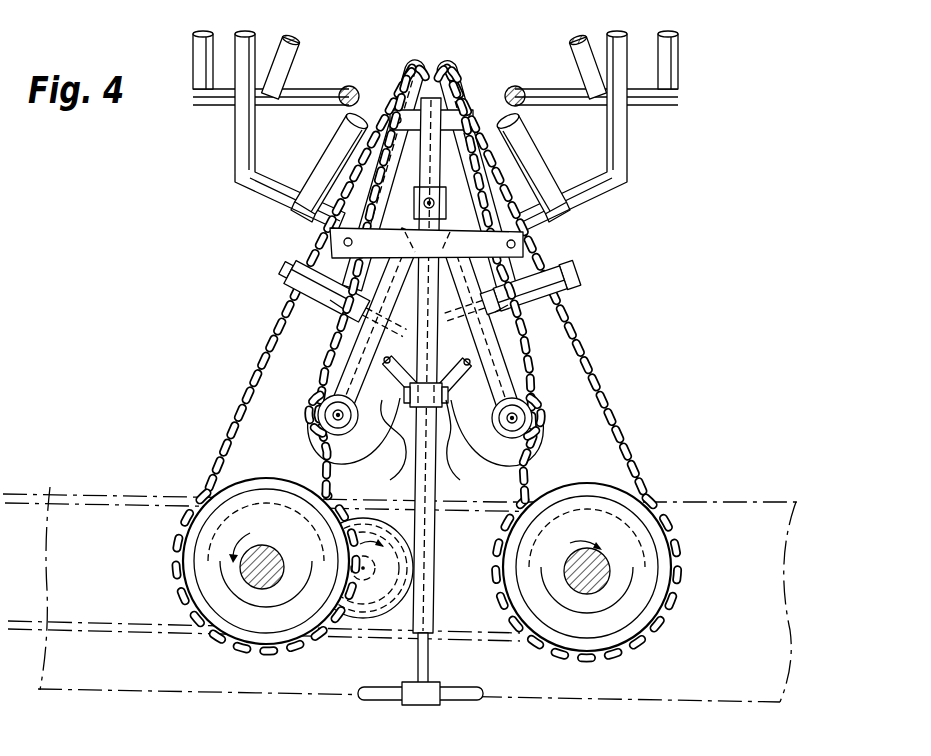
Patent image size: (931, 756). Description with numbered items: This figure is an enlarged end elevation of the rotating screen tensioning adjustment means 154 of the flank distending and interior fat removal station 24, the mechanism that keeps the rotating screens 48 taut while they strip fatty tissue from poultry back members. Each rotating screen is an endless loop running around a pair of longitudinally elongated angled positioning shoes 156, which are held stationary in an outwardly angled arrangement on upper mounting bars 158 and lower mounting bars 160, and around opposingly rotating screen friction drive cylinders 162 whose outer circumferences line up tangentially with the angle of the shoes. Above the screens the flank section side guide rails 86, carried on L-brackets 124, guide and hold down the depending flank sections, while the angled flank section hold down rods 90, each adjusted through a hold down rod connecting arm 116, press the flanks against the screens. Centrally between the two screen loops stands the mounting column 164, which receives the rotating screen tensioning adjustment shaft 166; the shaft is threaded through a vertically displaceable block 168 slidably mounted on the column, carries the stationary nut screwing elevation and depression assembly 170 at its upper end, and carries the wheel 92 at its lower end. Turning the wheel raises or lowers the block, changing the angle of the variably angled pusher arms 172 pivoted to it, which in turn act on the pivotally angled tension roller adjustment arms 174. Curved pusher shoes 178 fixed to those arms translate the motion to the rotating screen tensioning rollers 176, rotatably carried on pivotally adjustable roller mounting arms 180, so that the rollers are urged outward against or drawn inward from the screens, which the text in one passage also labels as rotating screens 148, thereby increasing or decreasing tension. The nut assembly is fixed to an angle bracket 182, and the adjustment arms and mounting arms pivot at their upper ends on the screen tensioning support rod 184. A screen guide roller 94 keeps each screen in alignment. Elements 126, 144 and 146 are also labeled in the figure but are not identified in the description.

The flank distending and interior fat removal station 24 is at (739, 165).
The rotating screens 48 is at (424, 363).
The flank section side guide rails 86 is at (432, 77).
The angled flank section hold down rods 90 is at (454, 192).
The wheel 92 is at (396, 703).
The screen guide roller 94 is at (427, 288).
The hold down rod connecting arm 116 is at (424, 131).
The L-brackets 124 is at (440, 67).
The pin 126 is at (434, 53).
The idler sprocket 144 is at (387, 626).
The sprocket wheel body 146 is at (424, 587).
The rotating screens 148 is at (400, 594).
The rotating screen tensioning adjustment means 154 is at (734, 275).
The angled positioning shoes 156 is at (432, 160).
The upper mounting bars 158 is at (485, 122).
The lower mounting bars 160 is at (478, 240).
The rotating screen friction drive cylinders 162 is at (424, 564).
The rotating screen tensioning adjustment means mounting column 164 is at (447, 365).
The rotating screen tensioning adjustment shaft 166 is at (456, 658).
The vertically displaceable block 168 is at (450, 439).
The stationary nut screwing elevation and depression assembly 170 is at (379, 355).
The variably angled pusher arms 172 is at (425, 328).
The rotating screen tension roller adjustment arms 174 is at (454, 288).
The rotating screen tensioning rollers 176 is at (428, 418).
The rotating screen tensioning roller curved pusher shoes 178 is at (428, 432).
The rotating screen tensioning roller mounting arms 180 is at (429, 330).
The angle bracket 182 is at (510, 176).
The screen tensioning support rod 184 is at (355, 175).